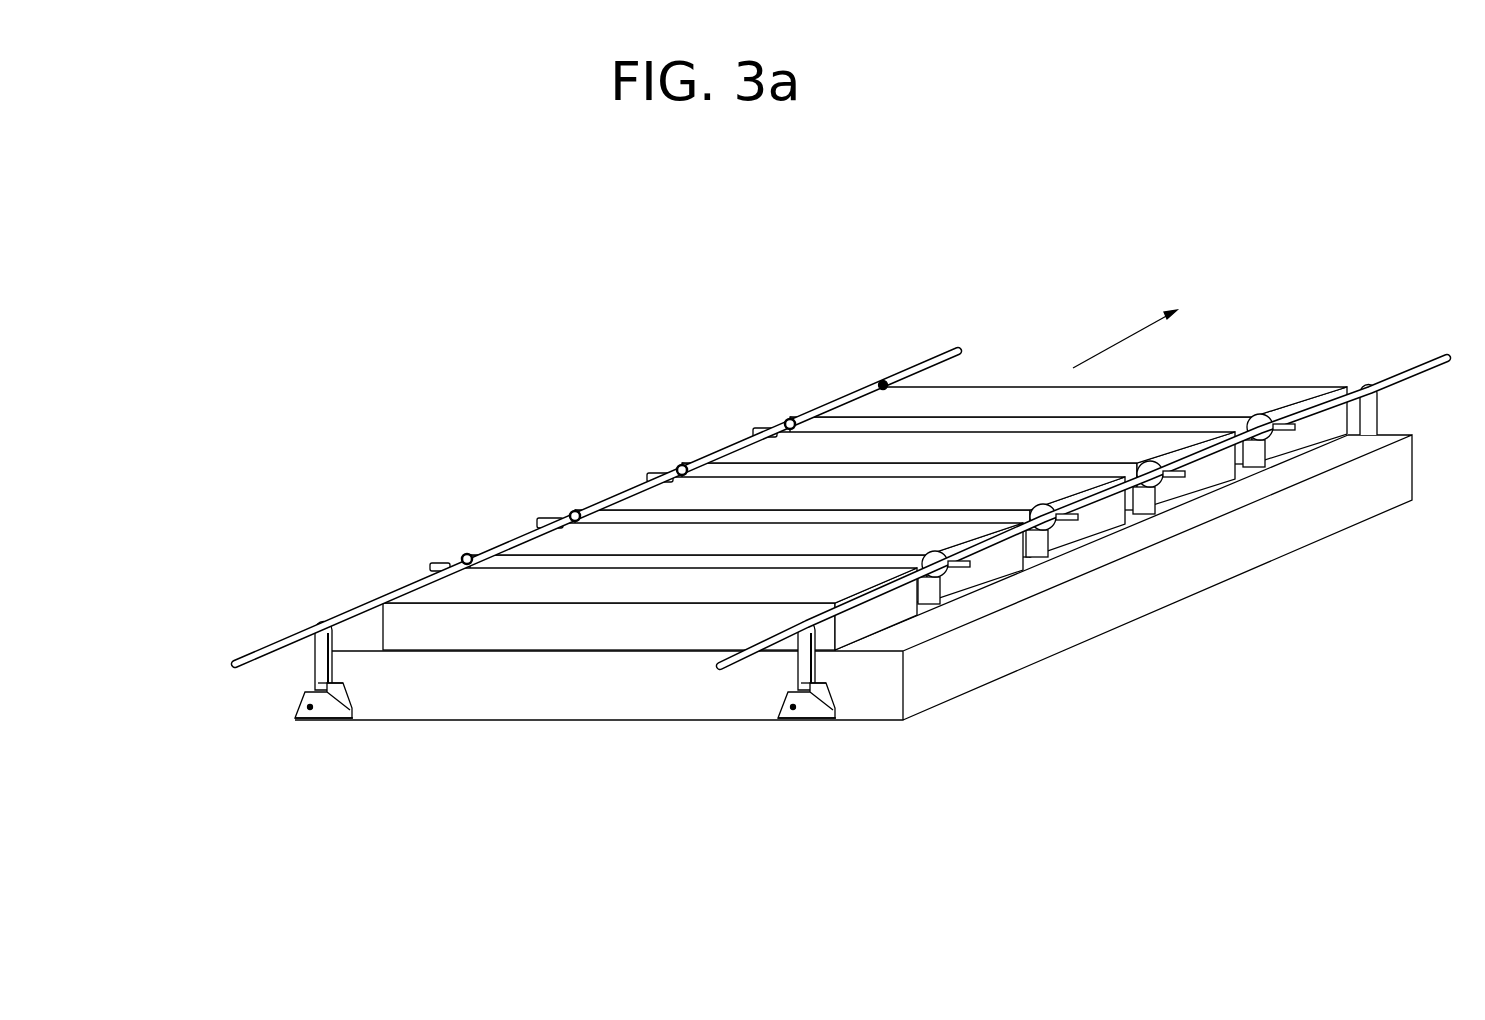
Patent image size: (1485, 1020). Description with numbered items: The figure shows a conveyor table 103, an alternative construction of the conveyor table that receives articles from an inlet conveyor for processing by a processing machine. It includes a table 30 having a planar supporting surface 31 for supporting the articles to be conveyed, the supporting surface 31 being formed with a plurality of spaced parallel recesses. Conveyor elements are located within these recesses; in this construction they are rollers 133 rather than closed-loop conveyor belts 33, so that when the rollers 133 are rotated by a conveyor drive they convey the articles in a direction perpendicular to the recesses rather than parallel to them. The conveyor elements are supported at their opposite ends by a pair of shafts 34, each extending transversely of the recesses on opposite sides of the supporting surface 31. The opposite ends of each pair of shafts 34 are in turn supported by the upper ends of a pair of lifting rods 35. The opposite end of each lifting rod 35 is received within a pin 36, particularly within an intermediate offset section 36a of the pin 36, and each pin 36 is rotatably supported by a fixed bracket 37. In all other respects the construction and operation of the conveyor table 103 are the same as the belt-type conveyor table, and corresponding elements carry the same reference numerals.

The conveyor table 103 is at (1082, 240).
The table 30 is at (574, 703).
The planar supporting surface 31 is at (643, 597).
The closed-loop conveyor belts 33 is at (318, 626).
The shafts 34 is at (950, 356).
The lifting rods 35 is at (1375, 405).
The pin 36 is at (350, 691).
The intermediate offset section 36a is at (313, 683).
The fixed bracket 37 is at (314, 726).
The rollers 133 is at (465, 560).